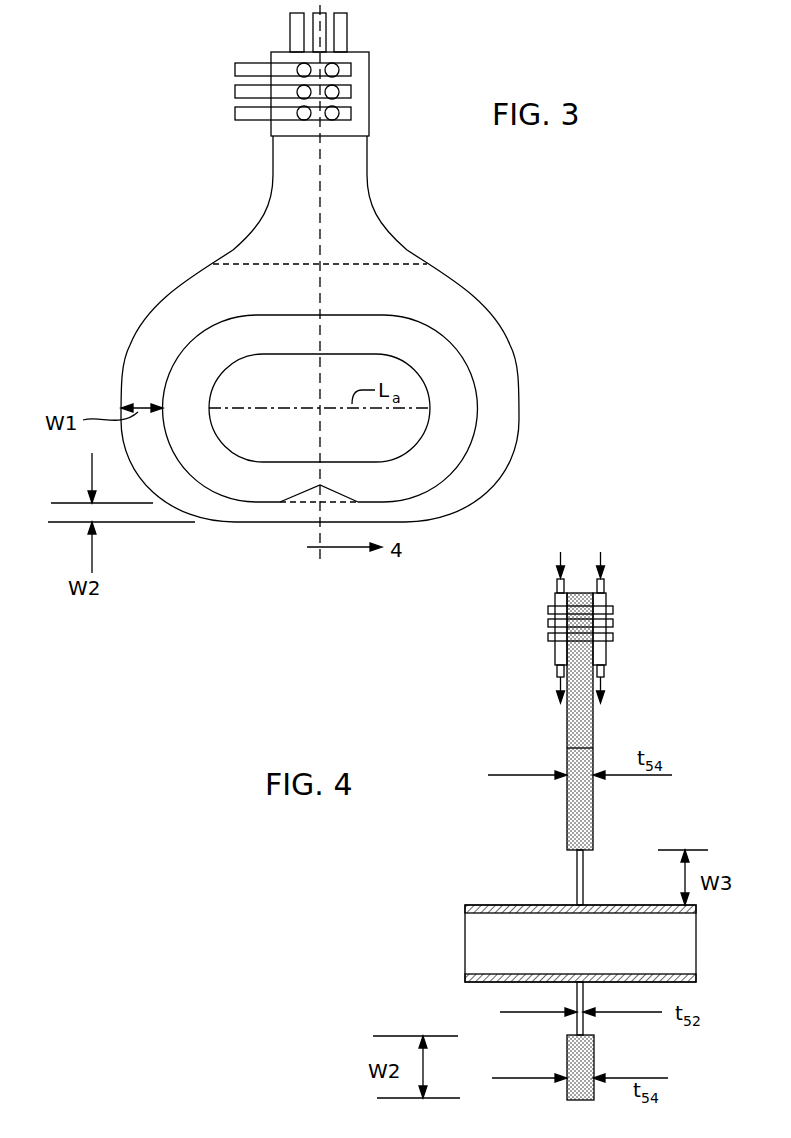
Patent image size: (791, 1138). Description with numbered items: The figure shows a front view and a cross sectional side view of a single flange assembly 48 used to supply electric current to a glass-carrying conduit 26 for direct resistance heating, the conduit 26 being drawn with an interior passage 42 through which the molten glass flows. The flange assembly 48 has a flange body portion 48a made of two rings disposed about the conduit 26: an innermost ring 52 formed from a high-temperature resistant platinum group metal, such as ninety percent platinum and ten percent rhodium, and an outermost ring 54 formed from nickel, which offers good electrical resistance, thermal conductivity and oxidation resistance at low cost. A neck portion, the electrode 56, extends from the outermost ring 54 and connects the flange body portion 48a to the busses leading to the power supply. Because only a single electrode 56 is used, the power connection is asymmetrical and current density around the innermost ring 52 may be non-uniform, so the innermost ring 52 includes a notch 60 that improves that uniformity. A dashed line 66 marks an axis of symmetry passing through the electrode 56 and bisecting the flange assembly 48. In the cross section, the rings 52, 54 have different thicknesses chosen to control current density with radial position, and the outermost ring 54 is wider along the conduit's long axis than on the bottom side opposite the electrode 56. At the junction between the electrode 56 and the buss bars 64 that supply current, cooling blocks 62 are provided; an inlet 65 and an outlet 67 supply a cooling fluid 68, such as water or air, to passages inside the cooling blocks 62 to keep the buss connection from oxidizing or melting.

In FIG. 3, the conduit 26 is at (422, 437).
In FIG. 4, the conduit 26 is at (500, 903).
In FIG. 3, the bore / passage of tube 42 is at (283, 449).
In FIG. 4, the bore / passage of tube 42 is at (594, 959).
In FIG. 3, the flange assembly 48 is at (332, 329).
In FIG. 4, the flange assembly 48 is at (599, 809).
In FIG. 3, the flange body portion 48a is at (115, 372).
In FIG. 3, the innermost ring 52 is at (477, 380).
In FIG. 4, the innermost ring 52 is at (577, 883).
In FIG. 3, the outermost ring 54 is at (452, 272).
In FIG. 4, the outermost ring 54 is at (567, 760).
In FIG. 3, the electrode 56 is at (273, 168).
In FIG. 3, the notch 60 is at (297, 497).
In FIG. 3, the cooling block 62 is at (369, 89).
In FIG. 4, the cooling block 62 is at (607, 598).
In FIG. 3, the buss bar 64 is at (243, 63).
In FIG. 4, the inlet 65 is at (555, 585).
In FIG. 3, the axis of symmetry 66 is at (320, 182).
In FIG. 4, the outlet 67 is at (607, 667).
In FIG. 4, the cooling fluid 68 is at (560, 560).